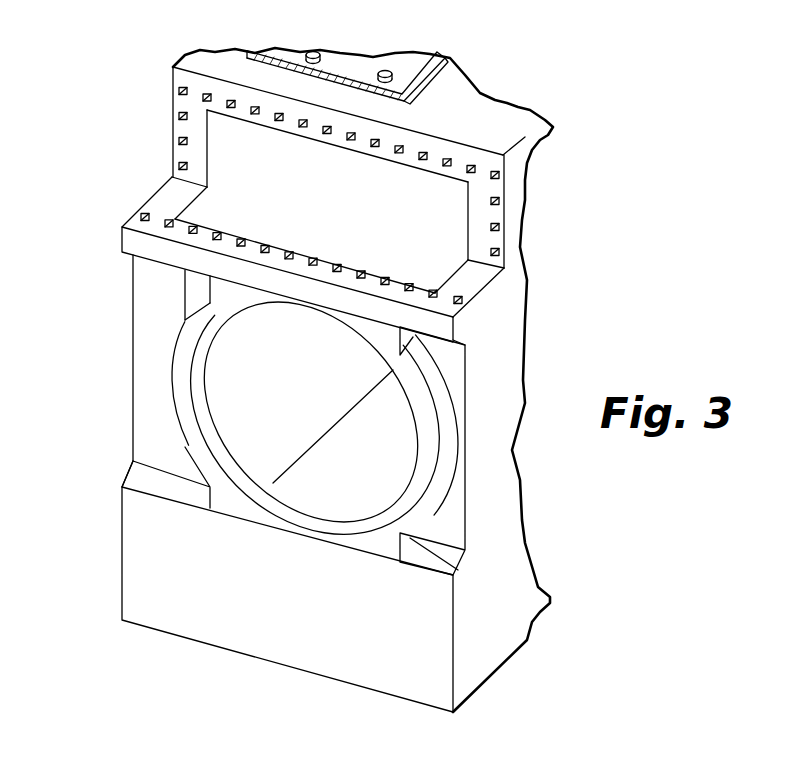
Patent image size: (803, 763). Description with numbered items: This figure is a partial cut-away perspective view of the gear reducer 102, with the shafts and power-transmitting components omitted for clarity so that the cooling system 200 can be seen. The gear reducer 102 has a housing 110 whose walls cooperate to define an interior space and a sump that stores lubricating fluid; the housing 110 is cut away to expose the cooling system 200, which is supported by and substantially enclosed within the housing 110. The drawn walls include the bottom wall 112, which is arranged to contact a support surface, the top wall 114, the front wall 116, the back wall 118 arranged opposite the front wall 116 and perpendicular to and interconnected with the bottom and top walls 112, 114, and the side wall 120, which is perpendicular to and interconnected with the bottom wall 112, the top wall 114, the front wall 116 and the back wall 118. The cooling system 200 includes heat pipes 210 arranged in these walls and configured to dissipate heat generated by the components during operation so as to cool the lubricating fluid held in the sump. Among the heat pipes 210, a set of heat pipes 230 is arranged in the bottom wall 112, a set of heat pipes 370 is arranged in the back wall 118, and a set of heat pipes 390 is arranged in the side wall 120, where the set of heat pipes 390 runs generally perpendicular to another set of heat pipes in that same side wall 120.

The gear reducer 102 is at (531, 104).
The housing 110 is at (420, 100).
The bottom wall 112 is at (307, 671).
The top wall 114 is at (437, 147).
The front wall 116 is at (493, 240).
The back wall 118 is at (180, 130).
The side wall 120 is at (235, 243).
The cooling system 200 is at (240, 67).
The heat pipes 210 is at (377, 140).
The set of heat pipes 230 is at (303, 0).
The set of heat pipes 370 is at (175, 116).
The set of heat pipes 390 is at (313, 255).